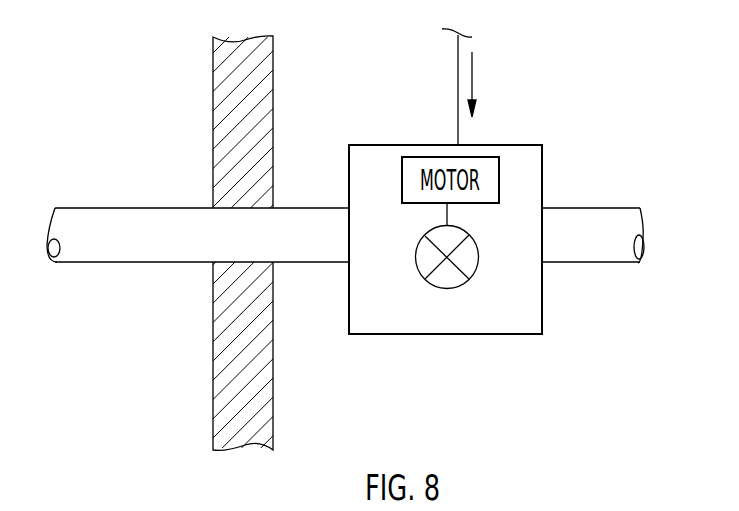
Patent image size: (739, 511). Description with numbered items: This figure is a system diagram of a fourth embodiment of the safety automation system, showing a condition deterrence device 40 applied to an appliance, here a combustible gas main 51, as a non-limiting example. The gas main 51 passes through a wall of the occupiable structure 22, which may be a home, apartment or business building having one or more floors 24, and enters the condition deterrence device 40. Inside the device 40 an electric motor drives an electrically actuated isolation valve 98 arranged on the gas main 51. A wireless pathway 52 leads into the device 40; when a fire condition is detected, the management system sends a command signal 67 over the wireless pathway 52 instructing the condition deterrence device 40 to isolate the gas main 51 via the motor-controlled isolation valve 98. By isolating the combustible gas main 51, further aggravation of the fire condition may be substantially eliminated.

The occupiable structure 22 is at (275, 97).
The floor 24 is at (362, 413).
The condition deterrence device 40 is at (492, 342).
The combustible gas main 51 is at (103, 263).
The wireless pathway 52 is at (458, 82).
The command signal 67 is at (473, 67).
The electrically actuated isolation valve 98 is at (478, 227).